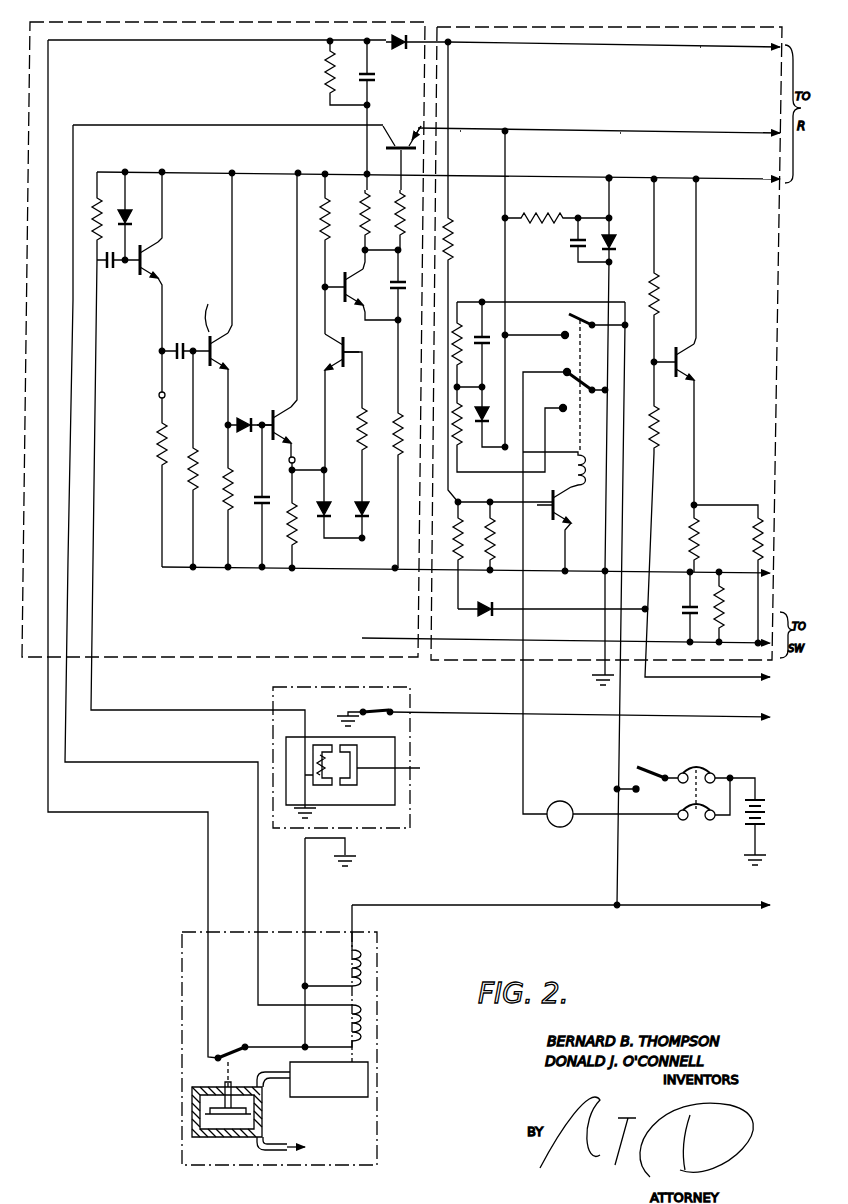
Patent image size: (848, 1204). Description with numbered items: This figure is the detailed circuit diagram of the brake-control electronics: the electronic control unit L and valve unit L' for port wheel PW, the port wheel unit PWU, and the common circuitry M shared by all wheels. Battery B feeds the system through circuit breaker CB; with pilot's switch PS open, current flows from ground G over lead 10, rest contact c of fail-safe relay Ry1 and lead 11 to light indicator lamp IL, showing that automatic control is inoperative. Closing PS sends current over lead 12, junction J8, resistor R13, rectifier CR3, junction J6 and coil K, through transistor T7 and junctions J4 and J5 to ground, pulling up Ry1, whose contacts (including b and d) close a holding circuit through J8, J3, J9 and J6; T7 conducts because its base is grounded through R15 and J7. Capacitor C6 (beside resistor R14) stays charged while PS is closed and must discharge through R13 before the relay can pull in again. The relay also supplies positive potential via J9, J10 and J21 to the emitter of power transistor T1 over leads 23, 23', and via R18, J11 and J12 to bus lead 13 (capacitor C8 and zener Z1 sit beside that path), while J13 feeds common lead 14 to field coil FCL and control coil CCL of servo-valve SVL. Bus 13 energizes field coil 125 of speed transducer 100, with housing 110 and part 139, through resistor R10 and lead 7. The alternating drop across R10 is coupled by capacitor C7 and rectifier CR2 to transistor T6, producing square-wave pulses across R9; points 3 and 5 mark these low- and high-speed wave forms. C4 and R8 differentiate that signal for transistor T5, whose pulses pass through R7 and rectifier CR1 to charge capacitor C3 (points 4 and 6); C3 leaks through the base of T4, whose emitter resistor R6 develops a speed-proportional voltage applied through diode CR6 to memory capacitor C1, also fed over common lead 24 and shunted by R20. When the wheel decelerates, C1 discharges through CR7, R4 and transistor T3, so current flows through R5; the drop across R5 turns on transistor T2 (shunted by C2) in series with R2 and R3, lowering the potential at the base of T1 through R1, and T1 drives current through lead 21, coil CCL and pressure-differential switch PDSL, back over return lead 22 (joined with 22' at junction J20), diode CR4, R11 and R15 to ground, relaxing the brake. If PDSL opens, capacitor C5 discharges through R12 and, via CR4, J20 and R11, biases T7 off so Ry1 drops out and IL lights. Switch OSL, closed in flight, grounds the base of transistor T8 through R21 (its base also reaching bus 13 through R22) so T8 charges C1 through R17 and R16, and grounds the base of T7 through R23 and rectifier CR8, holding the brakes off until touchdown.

The electronic control unit L is at (218, 364).
The common circuitry M is at (492, 660).
The valve unit L' is at (251, 1048).
The return lead 22 is at (414, 549).
The return lead 22' is at (656, 60).
The lead 21 is at (160, 125).
The lead 23 is at (474, 110).
The lead 23' is at (649, 116).
The bus lead 13 is at (530, 178).
The ground G is at (350, 570).
The lead 7 is at (93, 557).
The resistor R10 is at (96, 198).
The capacitor C7 is at (113, 268).
The rectifier CR2 is at (134, 222).
The transistor T6 is at (146, 259).
The wave-form reference point 3 is at (210, 309).
The capacitor C4 is at (179, 348).
The transistor T5 is at (215, 352).
The wave-form reference point 5 is at (158, 394).
The resistor R9 is at (160, 450).
The resistor R8 is at (184, 466).
The resistor R7 is at (226, 490).
The rectifier CR1 is at (245, 416).
The transistor T4 is at (280, 434).
The wave-form reference point 6 is at (295, 458).
The wave-form reference point 4 is at (262, 452).
The capacitor C3 is at (258, 509).
The resistor R6 is at (282, 529).
The diode CR6 is at (334, 518).
The diode CR7 is at (358, 505).
The resistor R4 is at (360, 422).
The resistor R3 is at (395, 435).
The transistor T3 is at (340, 352).
The transistor T2 is at (353, 277).
The capacitor C2 is at (396, 290).
The resistor R2 is at (362, 210).
The resistor R1 is at (398, 200).
The resistor R5 is at (322, 218).
The power transistor T1 is at (398, 141).
The resistor R12 is at (326, 73).
The capacitor C5 is at (375, 79).
The diode CR4 is at (392, 44).
The common junction J20 is at (450, 43).
The resistor R11 is at (452, 252).
The common junction J21 is at (506, 130).
The junction J10 is at (505, 217).
The resistor R18 is at (545, 216).
The capacitor C8 is at (570, 240).
The zener diode Z1 is at (622, 374).
The junction J11 is at (611, 218).
The junction J12 is at (609, 178).
The resistor R22 is at (657, 278).
The resistor R21 is at (658, 441).
The transistor T8 is at (681, 362).
The resistor R16 is at (690, 528).
The resistor R17 is at (754, 545).
The resistor R15 is at (494, 534).
The resistor R23 is at (471, 533).
The junction J7 is at (491, 569).
The rectifier CR8 is at (494, 619).
The lead 10 is at (588, 609).
The lead 24 is at (658, 642).
The memory capacitor C1 is at (685, 598).
The resistor R20 is at (725, 613).
The lead 11 is at (528, 712).
The lead 12 is at (617, 741).
The common lead 14 is at (513, 905).
The junction J13 is at (619, 905).
The junction J8 is at (626, 323).
The resistor R13 is at (468, 346).
The capacitor C6 is at (475, 344).
The resistor R14 is at (460, 435).
The rectifier CR3 is at (481, 417).
The junction J9 is at (507, 333).
The junction J6 is at (504, 446).
The fail-safe relay Ry1 is at (602, 438).
The relay contact d is at (563, 337).
The rest contact c is at (565, 371).
The relay contact b is at (562, 407).
The junction J3 is at (585, 330).
The transistor T7 is at (569, 515).
The relay coil K is at (578, 487).
The junction J4 is at (564, 571).
The junction J5 is at (604, 572).
The shock-absorber switch OSL is at (379, 705).
The port wheel unit PWU is at (410, 800).
The port wheel PW is at (395, 745).
The field coil 125 is at (313, 762).
The outer housing 110 is at (322, 752).
The contact 139 is at (395, 765).
The speed transducer 100 is at (370, 796).
The indicator lamp IL is at (612, 814).
The pilot's switch PS is at (642, 773).
The circuit breaker CB is at (700, 772).
The battery B is at (767, 800).
The field coil FCL is at (362, 961).
The control coil CCL is at (362, 1038).
The hydraulic servo-valve SVL is at (368, 1076).
The pressure-differential switch PDSL is at (216, 1068).